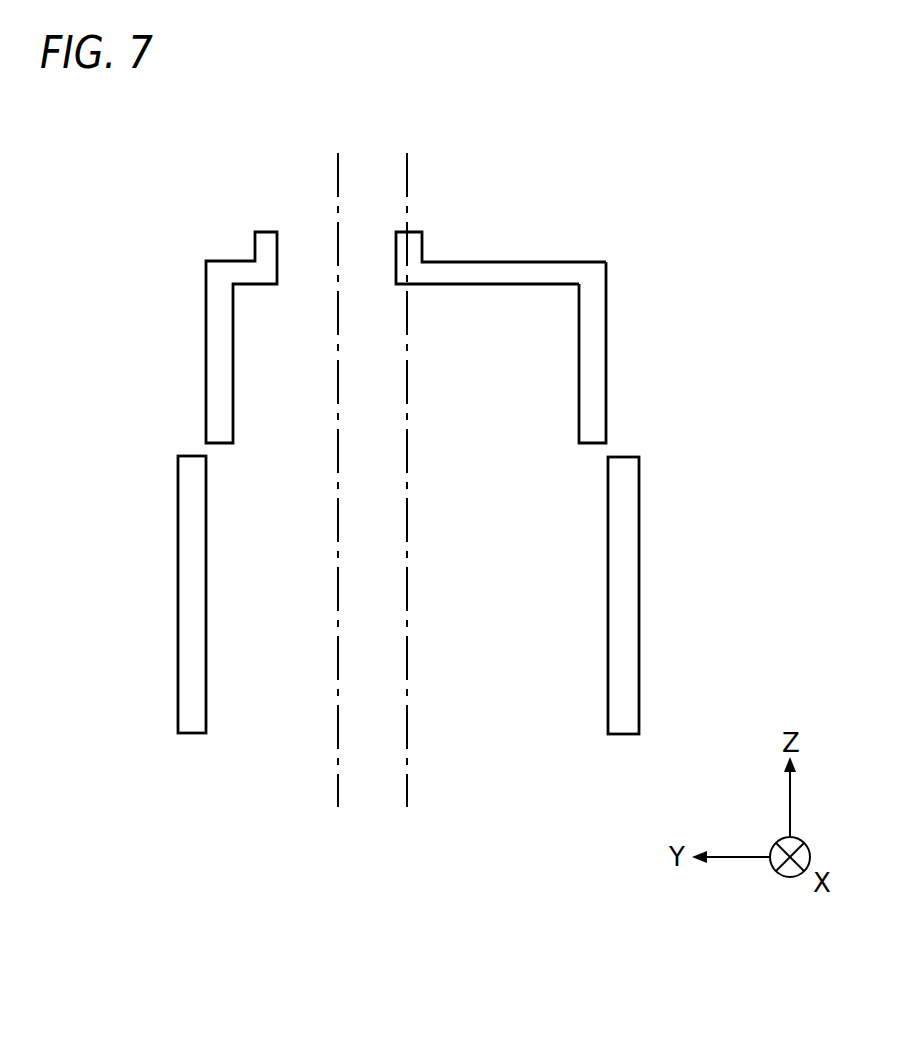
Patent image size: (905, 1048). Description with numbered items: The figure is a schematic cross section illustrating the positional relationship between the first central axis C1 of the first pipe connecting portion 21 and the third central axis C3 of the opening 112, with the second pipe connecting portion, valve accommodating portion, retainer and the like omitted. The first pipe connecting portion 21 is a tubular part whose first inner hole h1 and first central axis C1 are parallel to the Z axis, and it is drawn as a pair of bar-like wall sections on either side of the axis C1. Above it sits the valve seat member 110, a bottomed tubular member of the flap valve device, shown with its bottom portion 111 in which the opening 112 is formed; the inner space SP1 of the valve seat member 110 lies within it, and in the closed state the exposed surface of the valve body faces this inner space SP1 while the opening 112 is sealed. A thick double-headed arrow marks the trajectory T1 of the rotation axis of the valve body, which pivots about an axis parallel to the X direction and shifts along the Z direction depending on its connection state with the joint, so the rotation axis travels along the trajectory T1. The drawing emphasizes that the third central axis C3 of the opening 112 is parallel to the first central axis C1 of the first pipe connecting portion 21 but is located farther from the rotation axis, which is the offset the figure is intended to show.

The opening 112 is at (277, 253).
The bottom portion 111 is at (575, 262).
The valve seat member 110 is at (607, 357).
The first pipe connecting portion 21 is at (639, 602).
The first central axis C1 is at (407, 172).
The third central axis C3 is at (338, 178).
The trajectory T1 is at (528, 170).
The inner space SP1 is at (513, 381).
The first inner hole h1 is at (493, 620).